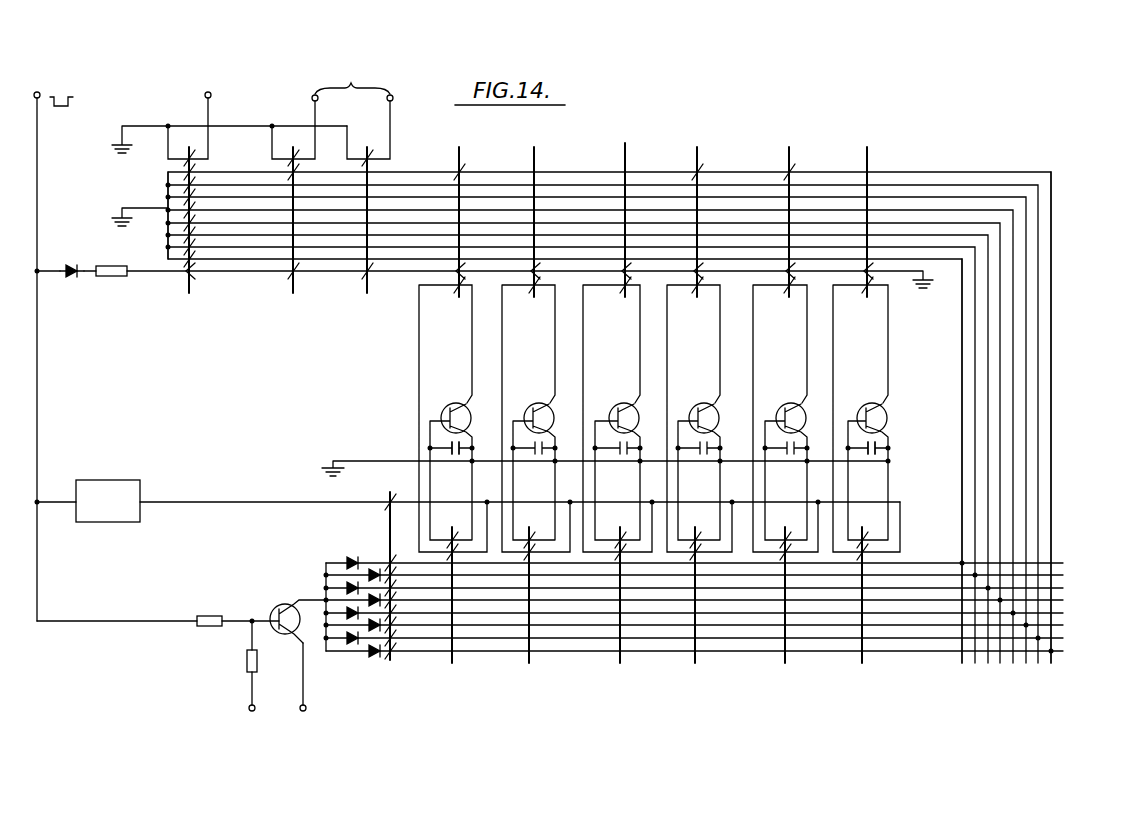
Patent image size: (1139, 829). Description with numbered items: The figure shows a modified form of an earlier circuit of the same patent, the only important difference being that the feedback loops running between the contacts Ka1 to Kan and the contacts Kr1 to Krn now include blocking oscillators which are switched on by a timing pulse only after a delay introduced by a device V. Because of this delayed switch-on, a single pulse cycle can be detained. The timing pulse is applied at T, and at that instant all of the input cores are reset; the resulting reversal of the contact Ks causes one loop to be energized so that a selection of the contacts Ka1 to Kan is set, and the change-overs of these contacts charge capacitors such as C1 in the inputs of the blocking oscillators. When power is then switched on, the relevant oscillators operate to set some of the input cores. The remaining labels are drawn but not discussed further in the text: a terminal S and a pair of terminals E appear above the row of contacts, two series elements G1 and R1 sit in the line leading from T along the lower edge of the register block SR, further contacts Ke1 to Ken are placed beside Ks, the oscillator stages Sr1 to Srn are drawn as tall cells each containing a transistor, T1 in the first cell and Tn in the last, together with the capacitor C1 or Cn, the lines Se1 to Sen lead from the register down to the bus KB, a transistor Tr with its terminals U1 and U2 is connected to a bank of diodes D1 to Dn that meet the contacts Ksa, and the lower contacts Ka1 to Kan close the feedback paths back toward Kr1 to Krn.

The timing pulse input T is at (53, 342).
The start signal terminal S is at (192, 113).
The input terminals E is at (332, 108).
The diode G1 is at (67, 285).
The resistor R1 is at (108, 285).
The shift register SR is at (211, 233).
The contact Ks is at (188, 235).
The input relay contact 1 Ke1 is at (292, 235).
The input relay contact n Ken is at (366, 235).
The contact Kr1 is at (454, 234).
The contact Krn is at (867, 234).
The storage stage 1 Sr1 is at (419, 365).
The storage stage n Srn is at (835, 389).
The selection line 1 Se1 is at (962, 340).
The selection line n Sen is at (1053, 379).
The transistor 1 T1 is at (471, 416).
The transistor n Tn is at (887, 416).
The capacitor C1 is at (461, 457).
The capacitor n Cn is at (873, 458).
The delay device V is at (108, 501).
The diode 1 D1 is at (360, 547).
The diode n Dn is at (364, 664).
The transistor Tr is at (294, 610).
The output relay contacts Ksa is at (405, 591).
The contact Ka1 is at (459, 609).
The contact Kan is at (864, 609).
The output bus KB is at (716, 607).
The supply voltage U1 is at (306, 721).
The supply voltage U2 is at (253, 721).